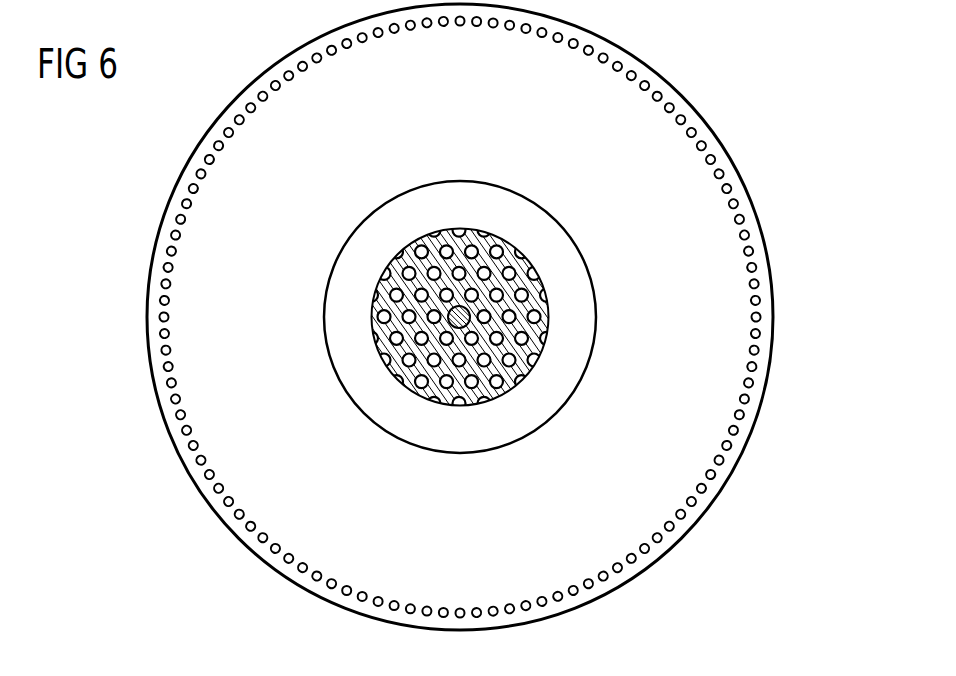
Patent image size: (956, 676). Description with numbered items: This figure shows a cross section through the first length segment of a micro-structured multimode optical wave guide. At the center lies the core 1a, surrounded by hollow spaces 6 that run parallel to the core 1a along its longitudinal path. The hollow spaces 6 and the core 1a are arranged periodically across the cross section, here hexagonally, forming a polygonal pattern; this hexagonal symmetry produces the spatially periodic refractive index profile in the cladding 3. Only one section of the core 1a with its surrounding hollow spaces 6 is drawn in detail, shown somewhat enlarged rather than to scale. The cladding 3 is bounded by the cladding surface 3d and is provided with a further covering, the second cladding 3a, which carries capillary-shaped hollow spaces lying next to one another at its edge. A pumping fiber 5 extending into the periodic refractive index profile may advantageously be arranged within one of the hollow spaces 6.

The core 1a is at (372, 316).
The cladding 3 is at (544, 287).
The second cladding 3a is at (728, 402).
The cladding surface 3d is at (578, 390).
The pumping fiber 5 is at (522, 340).
The hollow spaces 6 is at (545, 315).